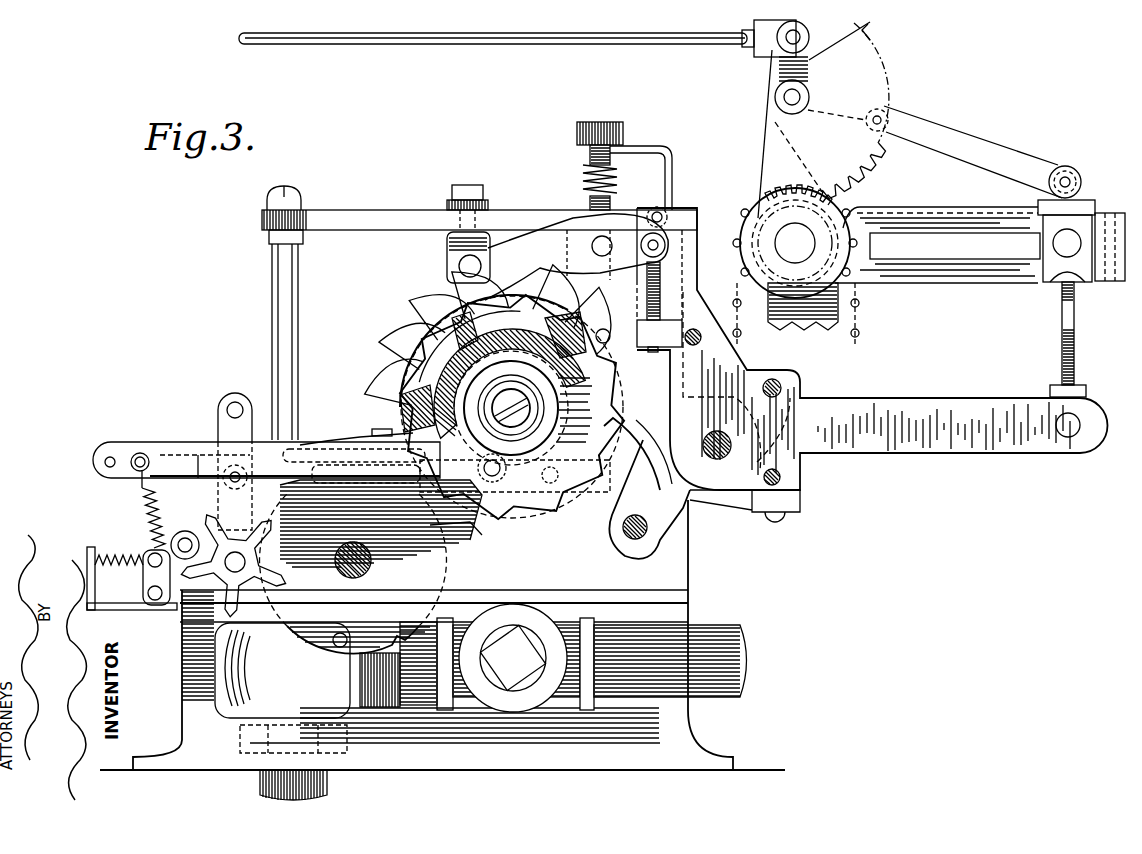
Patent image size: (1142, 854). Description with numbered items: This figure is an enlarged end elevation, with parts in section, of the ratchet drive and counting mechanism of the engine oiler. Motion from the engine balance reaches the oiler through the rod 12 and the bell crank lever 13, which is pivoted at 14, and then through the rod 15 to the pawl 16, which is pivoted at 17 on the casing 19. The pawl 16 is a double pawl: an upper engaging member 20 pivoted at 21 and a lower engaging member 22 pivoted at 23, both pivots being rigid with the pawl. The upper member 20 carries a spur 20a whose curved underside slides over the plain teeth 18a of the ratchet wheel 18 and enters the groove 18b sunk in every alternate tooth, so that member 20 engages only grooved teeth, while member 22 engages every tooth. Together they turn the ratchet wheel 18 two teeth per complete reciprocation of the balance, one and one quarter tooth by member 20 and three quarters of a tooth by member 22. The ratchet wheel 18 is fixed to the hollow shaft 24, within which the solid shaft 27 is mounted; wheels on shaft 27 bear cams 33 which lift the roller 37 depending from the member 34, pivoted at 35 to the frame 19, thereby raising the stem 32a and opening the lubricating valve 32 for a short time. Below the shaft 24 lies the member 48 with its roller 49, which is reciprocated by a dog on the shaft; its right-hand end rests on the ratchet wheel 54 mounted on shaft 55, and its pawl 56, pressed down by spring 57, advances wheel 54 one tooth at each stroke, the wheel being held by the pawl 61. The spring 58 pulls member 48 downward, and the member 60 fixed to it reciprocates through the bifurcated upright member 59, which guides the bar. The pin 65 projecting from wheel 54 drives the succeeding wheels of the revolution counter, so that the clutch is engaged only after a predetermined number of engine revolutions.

The rod 12 is at (527, 43).
The bell crank lever 13 is at (798, 38).
The pivot 14 is at (805, 252).
The rod 15 is at (1075, 333).
The pawl 16 is at (778, 422).
The pivot 17 is at (757, 462).
The ratchet wheel 18 is at (598, 402).
The ratchet wheel teeth 18a is at (556, 320).
The groove 18b is at (430, 345).
The casing 19 is at (665, 568).
The engaging member 20 is at (549, 240).
The spur 20a is at (482, 332).
The pivot 21 is at (605, 243).
The engaging member 22 is at (622, 488).
The pivot 23 is at (627, 531).
The shaft 24 is at (540, 414).
The solid shaft 27 is at (516, 405).
The lubricating valve 32 is at (243, 682).
The valve stem 32a is at (278, 312).
The cam 33 is at (408, 318).
The member 34 is at (378, 212).
The pivot 35 is at (665, 214).
The roller 37 is at (468, 285).
The member 48 is at (170, 466).
The roller 49 is at (500, 472).
The ratchet wheel 54 is at (447, 533).
The shaft 55 is at (350, 568).
The pawl 56 is at (340, 457).
The spring 57 is at (378, 434).
The spring 58 is at (146, 506).
The upright member 59 is at (220, 425).
The member 60 is at (197, 456).
The pawl 61 is at (455, 528).
The pin 65 is at (340, 648).